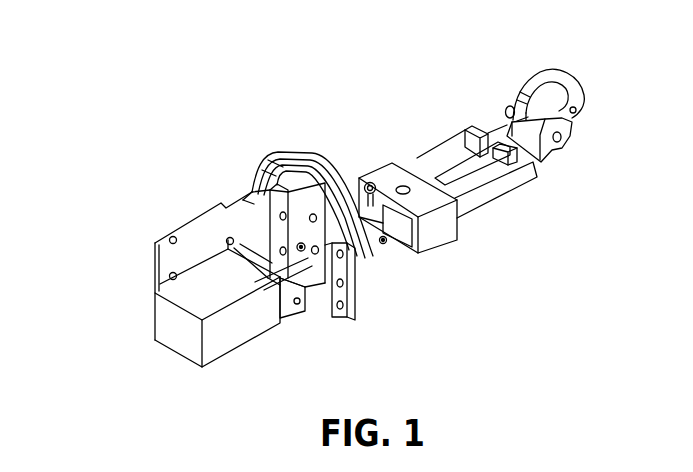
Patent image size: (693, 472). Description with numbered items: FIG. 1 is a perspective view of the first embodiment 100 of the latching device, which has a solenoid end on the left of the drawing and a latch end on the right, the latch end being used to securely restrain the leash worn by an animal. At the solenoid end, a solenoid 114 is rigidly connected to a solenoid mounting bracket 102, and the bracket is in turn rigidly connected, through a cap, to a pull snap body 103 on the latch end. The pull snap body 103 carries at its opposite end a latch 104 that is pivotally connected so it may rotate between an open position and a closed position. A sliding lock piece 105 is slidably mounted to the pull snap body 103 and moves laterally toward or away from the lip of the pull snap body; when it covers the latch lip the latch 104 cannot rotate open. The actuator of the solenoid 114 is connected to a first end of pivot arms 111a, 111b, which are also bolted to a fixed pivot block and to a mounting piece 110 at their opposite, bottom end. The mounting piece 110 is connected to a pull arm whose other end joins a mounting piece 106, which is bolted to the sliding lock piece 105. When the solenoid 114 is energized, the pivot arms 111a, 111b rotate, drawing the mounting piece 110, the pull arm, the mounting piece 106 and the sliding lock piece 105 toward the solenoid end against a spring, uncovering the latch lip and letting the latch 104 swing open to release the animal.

The first embodiment of the latching device 100 is at (232, 78).
The solenoid mounting bracket 102 is at (150, 235).
The pull snap body 103 is at (518, 189).
The latch 104 is at (585, 82).
The sliding lock piece 105 is at (458, 252).
The mounting piece 106 is at (390, 248).
The mounting piece 110 is at (302, 304).
The pivot arm 111a is at (357, 320).
The pivot arm 111b is at (283, 207).
The solenoid 114 is at (173, 344).